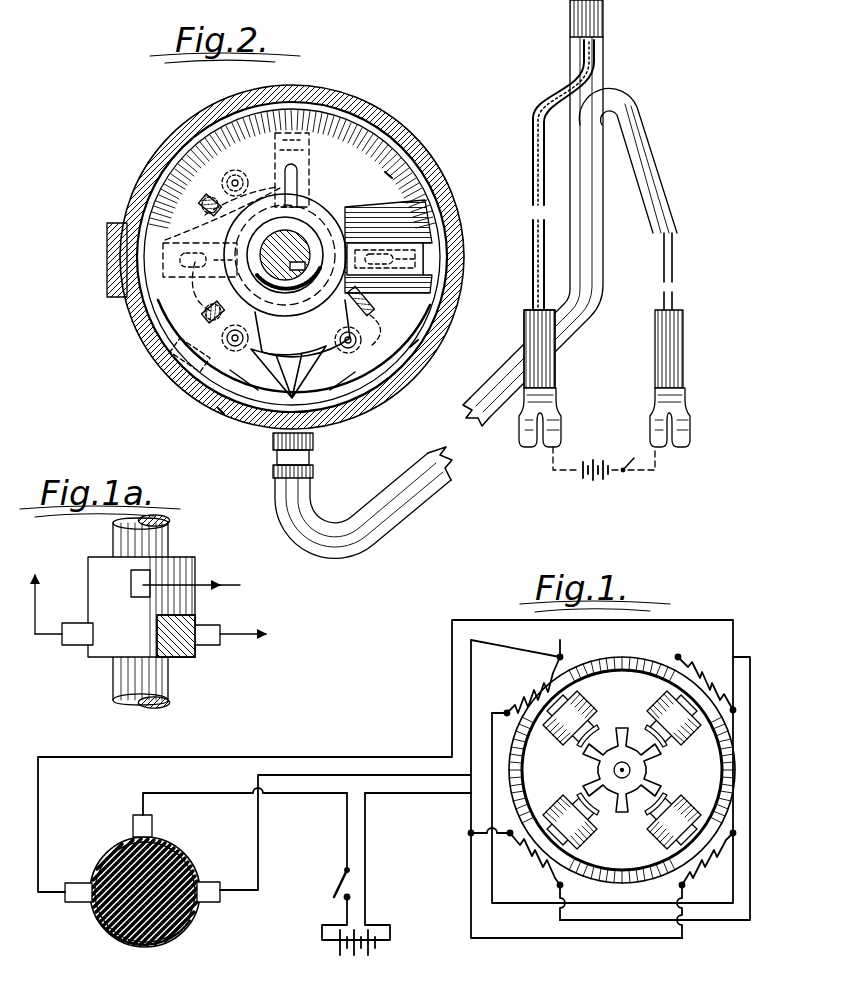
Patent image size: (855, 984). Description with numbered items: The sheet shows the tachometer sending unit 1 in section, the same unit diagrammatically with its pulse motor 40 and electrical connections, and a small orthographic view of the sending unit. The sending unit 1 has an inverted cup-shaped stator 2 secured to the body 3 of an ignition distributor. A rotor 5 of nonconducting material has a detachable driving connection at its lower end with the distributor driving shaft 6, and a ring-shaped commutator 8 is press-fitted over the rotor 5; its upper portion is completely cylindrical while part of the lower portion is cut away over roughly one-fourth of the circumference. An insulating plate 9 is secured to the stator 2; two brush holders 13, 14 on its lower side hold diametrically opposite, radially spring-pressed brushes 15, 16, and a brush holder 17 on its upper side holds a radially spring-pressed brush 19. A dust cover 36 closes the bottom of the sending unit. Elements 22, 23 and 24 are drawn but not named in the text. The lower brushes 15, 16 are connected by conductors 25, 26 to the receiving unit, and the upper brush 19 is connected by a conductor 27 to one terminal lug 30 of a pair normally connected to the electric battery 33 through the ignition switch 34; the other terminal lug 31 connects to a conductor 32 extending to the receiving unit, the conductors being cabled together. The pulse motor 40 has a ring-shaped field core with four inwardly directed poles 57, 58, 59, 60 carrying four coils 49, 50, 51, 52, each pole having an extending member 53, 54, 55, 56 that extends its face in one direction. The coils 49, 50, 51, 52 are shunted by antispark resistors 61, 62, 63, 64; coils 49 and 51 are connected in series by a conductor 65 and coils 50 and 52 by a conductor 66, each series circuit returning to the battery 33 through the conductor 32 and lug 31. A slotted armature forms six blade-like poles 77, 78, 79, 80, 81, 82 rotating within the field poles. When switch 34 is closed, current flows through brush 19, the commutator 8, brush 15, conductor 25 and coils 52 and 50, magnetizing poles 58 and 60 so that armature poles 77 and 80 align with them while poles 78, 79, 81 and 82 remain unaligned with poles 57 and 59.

In FIG. 2, the sending unit 1 is at (120, 312).
In FIG. 1, the sending unit 1 is at (143, 948).
In FIG. 2, the stator 2 is at (437, 209).
In FIG. 2, the body 3 is at (418, 189).
In FIG. 1A, the rotor 5 is at (188, 657).
In FIG. 1, the rotor 5 is at (177, 853).
In FIG. 2, the distributor driving shaft 6 is at (312, 242).
In FIG. 2, the commutator 8 is at (358, 319).
In FIG. 1A, the commutator 8 is at (185, 575).
In FIG. 1, the commutator 8 is at (165, 942).
In FIG. 2, the insulating plate 9 is at (436, 283).
In FIG. 2, the brush holder 13 is at (122, 257).
In FIG. 2, the brush holder 14 is at (436, 249).
In FIG. 2, the brush 15 is at (285, 255).
In FIG. 1, the brush 15 is at (78, 902).
In FIG. 2, the brush 16 is at (298, 267).
In FIG. 1, the brush 16 is at (210, 902).
In FIG. 2, the brush holder 17 is at (300, 151).
In FIG. 2, the brush 19 is at (302, 238).
In FIG. 1, the brush 19 is at (133, 826).
In FIG. 2, the bearing screw 22 is at (185, 345).
In FIG. 2, the inner rim 23 is at (445, 306).
In FIG. 2, the bearing 24 is at (195, 192).
In FIG. 2, the conductor 25 is at (292, 375).
In FIG. 1, the conductor 25 is at (266, 757).
In FIG. 2, the conductor 26 is at (357, 363).
In FIG. 1, the conductor 26 is at (308, 775).
In FIG. 2, the conductor 27 is at (236, 392).
In FIG. 1, the conductor 27 is at (227, 793).
In FIG. 2, the terminal lug 30 is at (684, 414).
In FIG. 2, the terminal lug 31 is at (551, 415).
In FIG. 2, the conductor 32 is at (531, 172).
In FIG. 1, the conductor 32 is at (392, 800).
In FIG. 2, the electric battery 33 is at (593, 490).
In FIG. 1, the electric battery 33 is at (340, 958).
In FIG. 2, the ignition switch 34 is at (634, 462).
In FIG. 1, the ignition switch 34 is at (336, 888).
In FIG. 2, the dust cover 36 is at (387, 172).
In FIG. 1, the pulse motor 40 is at (618, 940).
In FIG. 1, the coil 49 is at (666, 833).
In FIG. 1, the coil 50 is at (563, 820).
In FIG. 1, the coil 51 is at (562, 733).
In FIG. 1, the coil 52 is at (668, 737).
In FIG. 1, the extending member 53 is at (668, 789).
In FIG. 1, the extending member 54 is at (592, 826).
In FIG. 1, the extending member 55 is at (574, 753).
In FIG. 1, the extending member 56 is at (637, 730).
In FIG. 1, the pole 57 is at (648, 822).
In FIG. 1, the pole 58 is at (570, 797).
In FIG. 1, the pole 59 is at (578, 742).
In FIG. 1, the pole 60 is at (661, 748).
In FIG. 1, the antispark resistor 61 is at (708, 858).
In FIG. 1, the antispark resistor 62 is at (538, 862).
In FIG. 1, the antispark resistor 63 is at (526, 690).
In FIG. 1, the antispark resistor 64 is at (712, 690).
In FIG. 1, the conductor 65 is at (492, 877).
In FIG. 1, the conductor 66 is at (751, 845).
In FIG. 1, the armature pole 77 is at (622, 770).
In FIG. 1, the armature pole 78 is at (632, 803).
In FIG. 1, the armature pole 79 is at (642, 779).
In FIG. 1, the armature pole 80 is at (642, 751).
In FIG. 1, the armature pole 81 is at (618, 747).
In FIG. 1, the armature pole 82 is at (600, 765).